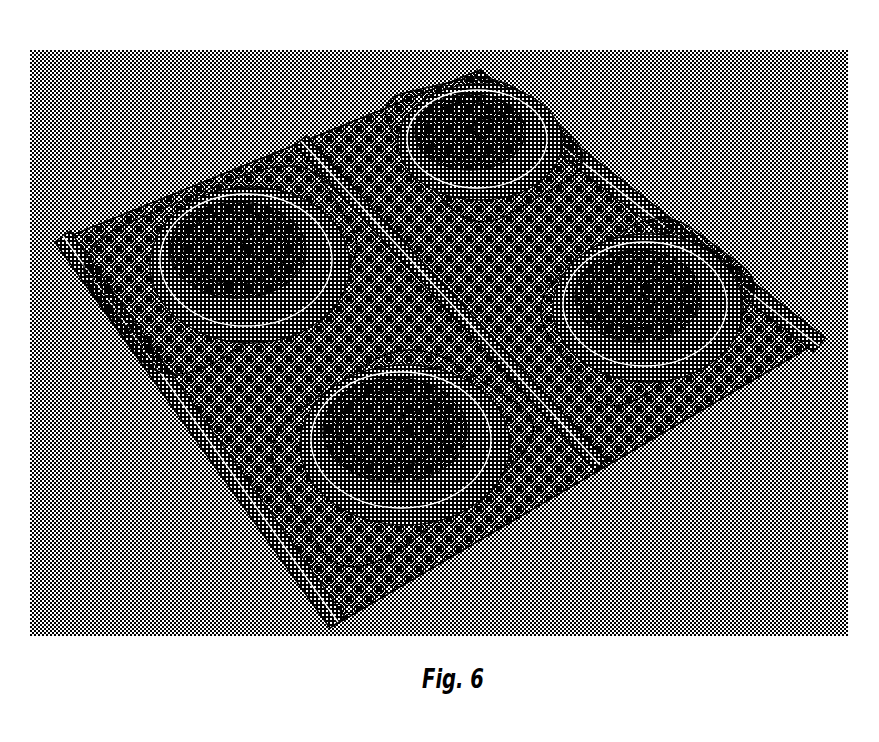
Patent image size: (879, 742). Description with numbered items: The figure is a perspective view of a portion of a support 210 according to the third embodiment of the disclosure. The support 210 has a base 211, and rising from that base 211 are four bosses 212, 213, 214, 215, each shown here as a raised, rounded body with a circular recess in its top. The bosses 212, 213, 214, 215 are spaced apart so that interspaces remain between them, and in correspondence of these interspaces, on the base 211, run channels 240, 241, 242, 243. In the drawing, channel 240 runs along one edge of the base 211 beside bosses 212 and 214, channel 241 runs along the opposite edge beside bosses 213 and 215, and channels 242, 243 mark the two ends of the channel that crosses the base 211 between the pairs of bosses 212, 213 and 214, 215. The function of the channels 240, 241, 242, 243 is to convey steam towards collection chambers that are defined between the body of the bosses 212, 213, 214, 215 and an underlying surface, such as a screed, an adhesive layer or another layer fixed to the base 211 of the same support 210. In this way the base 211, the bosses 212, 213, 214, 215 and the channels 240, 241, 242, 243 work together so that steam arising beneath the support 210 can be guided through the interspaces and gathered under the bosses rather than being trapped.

The support 210 is at (680, 145).
The base 211 is at (213, 423).
The boss 212 is at (128, 182).
The boss 213 is at (368, 82).
The boss 214 is at (288, 532).
The boss 215 is at (763, 272).
The channel 240 is at (178, 411).
The channel 241 is at (630, 187).
The channel 242 is at (290, 143).
The channel 243 is at (595, 472).